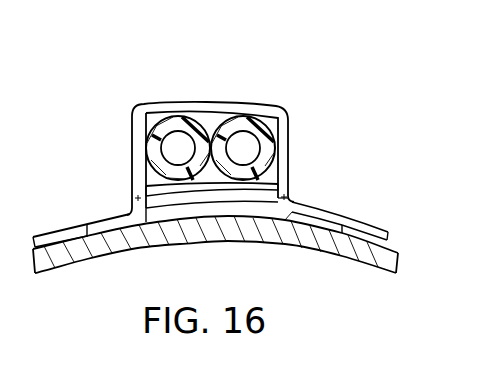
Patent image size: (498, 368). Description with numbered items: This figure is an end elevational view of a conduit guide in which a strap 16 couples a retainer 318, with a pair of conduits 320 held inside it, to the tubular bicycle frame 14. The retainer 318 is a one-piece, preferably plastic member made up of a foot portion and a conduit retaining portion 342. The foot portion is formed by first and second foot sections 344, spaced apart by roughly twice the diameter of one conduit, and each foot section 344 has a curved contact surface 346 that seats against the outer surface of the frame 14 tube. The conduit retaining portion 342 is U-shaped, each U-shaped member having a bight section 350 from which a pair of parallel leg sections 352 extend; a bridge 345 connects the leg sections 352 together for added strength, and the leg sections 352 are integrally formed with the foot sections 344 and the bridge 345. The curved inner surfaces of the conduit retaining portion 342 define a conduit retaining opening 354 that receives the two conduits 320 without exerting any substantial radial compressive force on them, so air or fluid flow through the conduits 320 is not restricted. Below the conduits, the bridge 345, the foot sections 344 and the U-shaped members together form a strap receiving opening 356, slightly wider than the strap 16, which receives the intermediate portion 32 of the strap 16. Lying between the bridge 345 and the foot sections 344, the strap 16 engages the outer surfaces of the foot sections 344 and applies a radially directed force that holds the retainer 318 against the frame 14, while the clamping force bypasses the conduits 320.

The bicycle frame 14 is at (396, 242).
The strap 16 is at (366, 211).
The intermediate portion 32 is at (212, 195).
The retainer 318 is at (231, 113).
The conduits 320 is at (232, 116).
The conduit retaining portion 342 is at (285, 107).
The foot sections 344 is at (112, 219).
The bridge 345 is at (265, 207).
The curved contact surface 346 is at (130, 232).
The bight section 350 is at (216, 108).
The leg sections 352 is at (132, 133).
The conduit retaining opening 354 is at (284, 183).
The strap receiving opening 356 is at (132, 182).